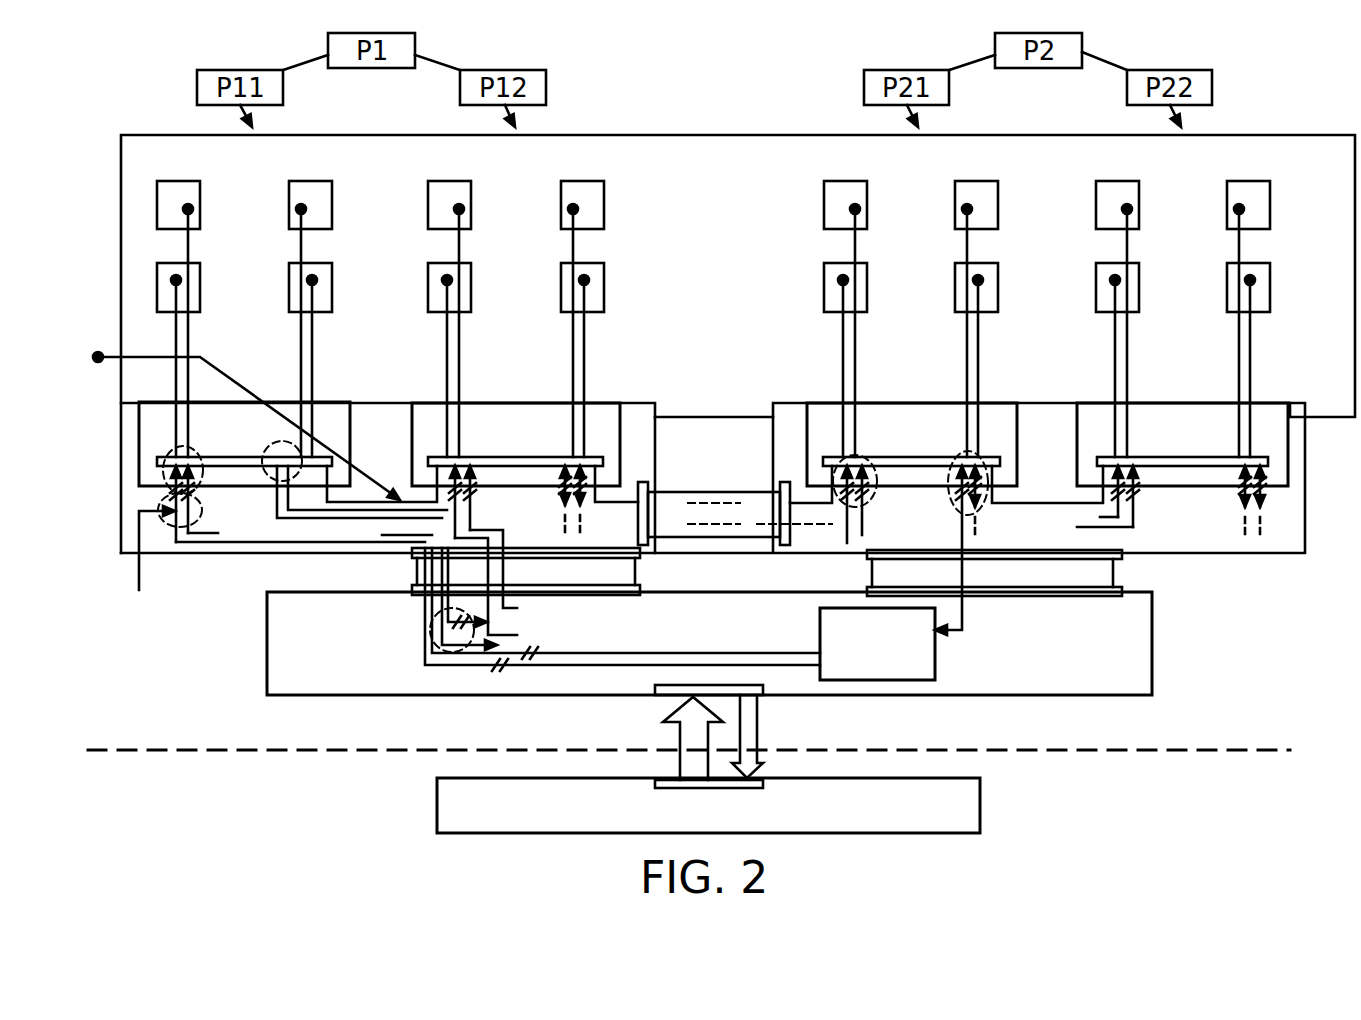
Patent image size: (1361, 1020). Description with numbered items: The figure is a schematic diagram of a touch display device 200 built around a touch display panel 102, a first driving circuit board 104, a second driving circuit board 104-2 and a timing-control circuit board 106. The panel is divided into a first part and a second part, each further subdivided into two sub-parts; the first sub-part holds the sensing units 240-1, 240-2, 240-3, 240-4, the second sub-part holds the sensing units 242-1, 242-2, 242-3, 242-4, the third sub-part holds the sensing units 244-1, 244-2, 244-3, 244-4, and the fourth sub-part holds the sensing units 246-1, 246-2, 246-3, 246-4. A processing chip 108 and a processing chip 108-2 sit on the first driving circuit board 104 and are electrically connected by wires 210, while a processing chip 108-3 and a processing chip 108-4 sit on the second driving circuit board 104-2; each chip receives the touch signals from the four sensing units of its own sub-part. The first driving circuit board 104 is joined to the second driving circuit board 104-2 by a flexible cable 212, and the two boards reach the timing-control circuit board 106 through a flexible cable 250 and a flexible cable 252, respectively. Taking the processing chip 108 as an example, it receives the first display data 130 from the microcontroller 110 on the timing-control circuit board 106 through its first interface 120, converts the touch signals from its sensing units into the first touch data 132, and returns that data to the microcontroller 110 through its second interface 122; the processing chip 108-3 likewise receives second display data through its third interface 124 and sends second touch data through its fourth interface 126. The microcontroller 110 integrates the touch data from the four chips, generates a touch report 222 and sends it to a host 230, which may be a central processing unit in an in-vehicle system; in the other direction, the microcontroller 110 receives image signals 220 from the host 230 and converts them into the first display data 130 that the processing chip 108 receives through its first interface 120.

The touch display device 200 is at (80, 59).
The touch display panel 102 is at (121, 135).
The first driving circuit board 104 is at (121, 513).
The second driving circuit board 104-2 is at (1277, 553).
The timing-control circuit board 106 is at (1153, 656).
The processing chip 108 is at (125, 445).
The processing chip 108-2 is at (600, 400).
The processing chip 108-3 is at (862, 400).
The processing chip 108-4 is at (1133, 400).
The microcontroller 110 is at (937, 668).
The first interface 120 is at (172, 450).
The second interface 122 is at (262, 473).
The third interface 124 is at (855, 455).
The fourth interface 126 is at (948, 497).
The first display data 130 is at (160, 558).
The first touch data 132 is at (458, 659).
The wires 210 is at (221, 421).
The flexible cable 212 is at (713, 478).
The image signals 220 is at (677, 735).
The touch report 222 is at (757, 722).
The host 230 is at (982, 805).
The flexible cable 250 is at (400, 572).
The flexible cable 252 is at (1127, 572).
The sensing unit 240-1 is at (160, 181).
The sensing unit 240-2 is at (200, 274).
The sensing unit 240-3 is at (292, 181).
The sensing unit 240-4 is at (332, 274).
The sensing unit 242-1 is at (431, 181).
The sensing unit 242-2 is at (471, 274).
The sensing unit 242-3 is at (564, 181).
The sensing unit 242-4 is at (604, 274).
The sensing unit 244-1 is at (827, 181).
The sensing unit 244-2 is at (867, 274).
The sensing unit 244-3 is at (958, 181).
The sensing unit 244-4 is at (998, 274).
The sensing unit 246-1 is at (1099, 181).
The sensing unit 246-2 is at (1139, 274).
The sensing unit 246-3 is at (1230, 181).
The sensing unit 246-4 is at (1270, 274).